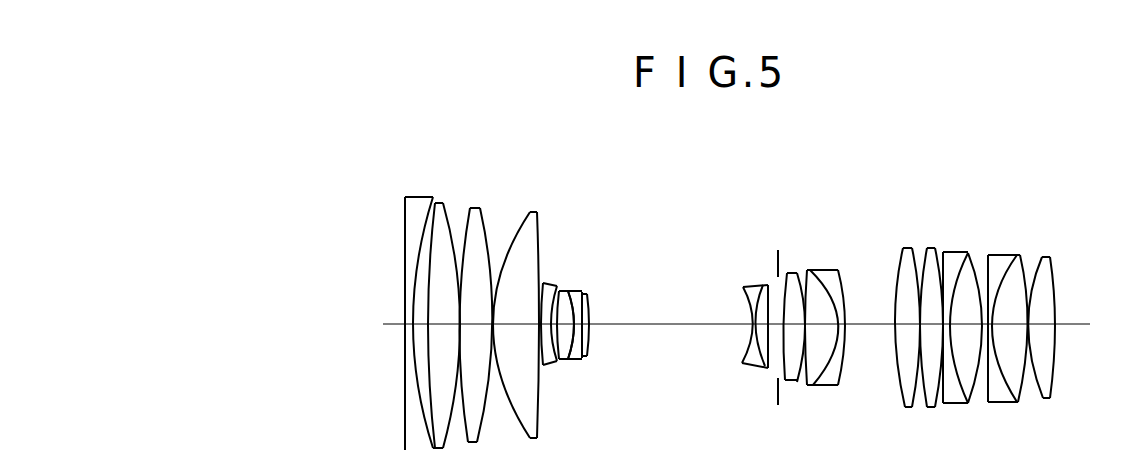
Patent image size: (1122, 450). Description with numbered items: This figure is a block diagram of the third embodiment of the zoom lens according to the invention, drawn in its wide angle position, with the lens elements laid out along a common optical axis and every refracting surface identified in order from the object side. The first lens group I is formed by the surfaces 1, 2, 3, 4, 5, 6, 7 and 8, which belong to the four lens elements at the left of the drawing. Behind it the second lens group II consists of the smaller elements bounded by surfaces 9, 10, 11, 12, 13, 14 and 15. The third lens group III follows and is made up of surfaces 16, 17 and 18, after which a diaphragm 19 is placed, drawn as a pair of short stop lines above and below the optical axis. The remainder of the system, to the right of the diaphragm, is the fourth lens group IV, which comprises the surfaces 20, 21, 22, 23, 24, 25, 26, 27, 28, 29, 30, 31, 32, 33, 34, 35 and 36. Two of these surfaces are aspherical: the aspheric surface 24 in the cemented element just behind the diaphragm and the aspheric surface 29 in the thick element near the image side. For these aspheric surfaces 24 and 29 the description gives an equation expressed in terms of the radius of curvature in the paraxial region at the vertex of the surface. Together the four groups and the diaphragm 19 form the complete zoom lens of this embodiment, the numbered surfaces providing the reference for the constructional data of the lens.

The surface R1 1 is at (405, 208).
The surface R2 2 is at (435, 210).
The surface R3 3 is at (440, 207).
The surface R4 4 is at (446, 205).
The surface R5 5 is at (470, 208).
The surface R6 6 is at (486, 210).
The surface R7 7 is at (530, 216).
The surface R8 8 is at (540, 218).
The surface R9 9 is at (545, 283).
The surface R10 10 is at (556, 288).
The surface R11 11 is at (562, 291).
The surface R12 12 is at (569, 292).
The surface R13 13 is at (576, 294).
The surface R14 14 is at (584, 294).
The surface R15 15 is at (588, 300).
The surface R16 16 is at (745, 286).
The surface R17 17 is at (760, 285).
The surface R18 18 is at (769, 283).
The diaphragm 19 is at (778, 250).
The surface R20 20 is at (788, 273).
The surface R21 21 is at (797, 272).
The surface R22 22 is at (811, 270).
The surface R23 23 is at (824, 270).
The aspheric surface R24 24 is at (840, 271).
The surface R25 25 is at (904, 250).
The surface R26 26 is at (918, 250).
The surface R27 27 is at (928, 250).
The surface R28 28 is at (942, 252).
The aspheric surface R29 29 is at (960, 255).
The surface R30 30 is at (977, 255).
The surface R31 31 is at (989, 257).
The surface R32 32 is at (1013, 256).
The surface R33 33 is at (1023, 257).
The surface R34 34 is at (1030, 256).
The surface R35 35 is at (1047, 258).
The surface R36 36 is at (1053, 258).